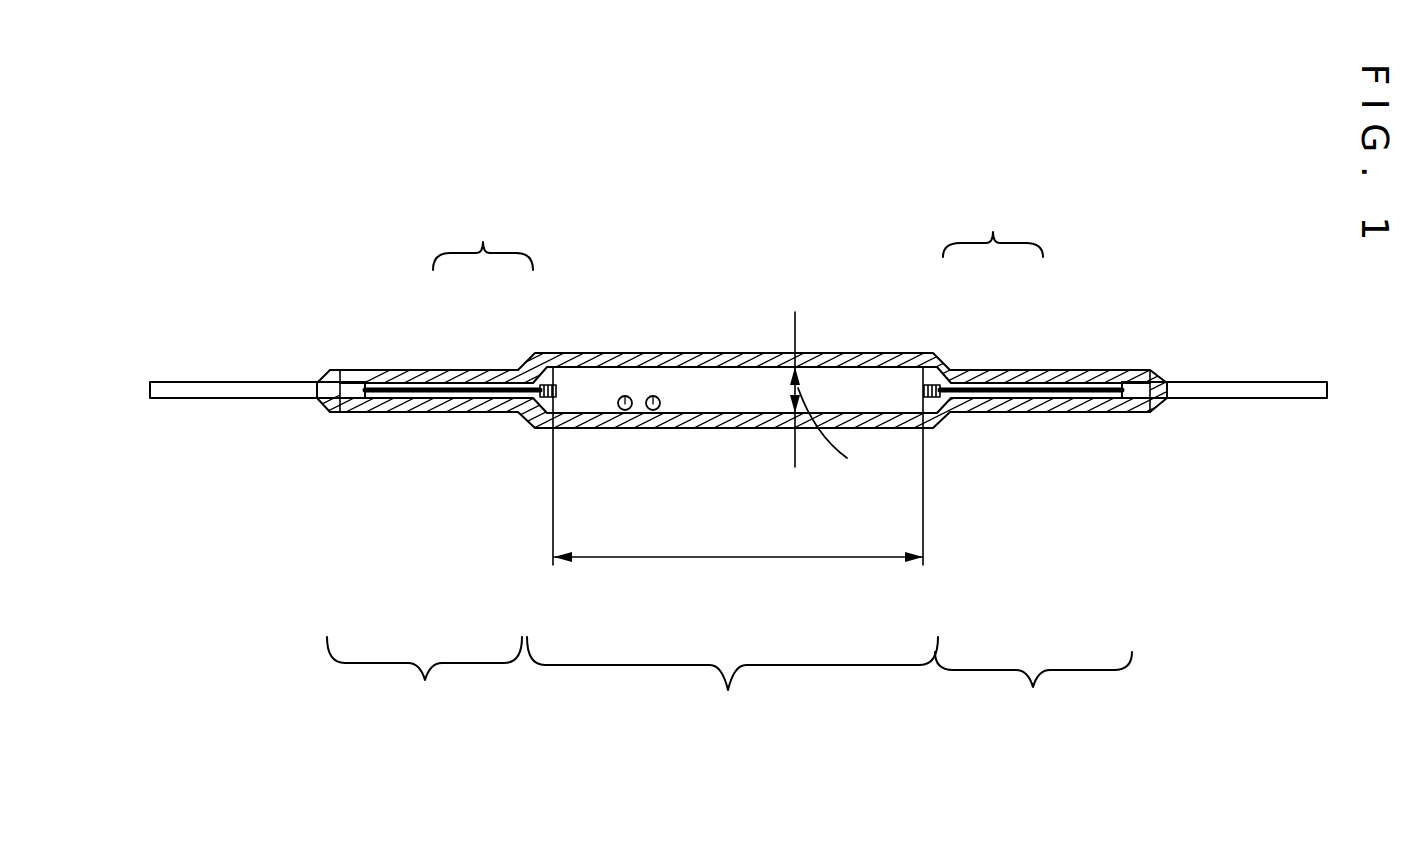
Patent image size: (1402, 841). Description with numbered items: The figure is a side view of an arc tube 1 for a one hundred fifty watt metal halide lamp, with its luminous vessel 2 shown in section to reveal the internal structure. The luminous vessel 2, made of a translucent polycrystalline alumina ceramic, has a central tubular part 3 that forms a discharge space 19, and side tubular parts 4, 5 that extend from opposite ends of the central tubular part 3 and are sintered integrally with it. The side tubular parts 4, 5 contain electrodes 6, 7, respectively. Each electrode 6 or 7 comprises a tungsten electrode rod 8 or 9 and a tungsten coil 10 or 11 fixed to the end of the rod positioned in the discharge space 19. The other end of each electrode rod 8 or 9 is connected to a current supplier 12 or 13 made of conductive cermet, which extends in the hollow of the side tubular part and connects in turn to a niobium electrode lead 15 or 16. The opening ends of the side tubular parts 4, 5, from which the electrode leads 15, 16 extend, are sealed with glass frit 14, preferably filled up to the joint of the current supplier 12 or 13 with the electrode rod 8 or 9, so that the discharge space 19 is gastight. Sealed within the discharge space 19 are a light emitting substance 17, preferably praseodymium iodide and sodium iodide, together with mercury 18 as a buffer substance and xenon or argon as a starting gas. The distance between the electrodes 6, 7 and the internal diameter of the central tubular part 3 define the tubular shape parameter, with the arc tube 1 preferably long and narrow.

The arc tube 1 is at (828, 194).
The luminous vessel 2 is at (849, 352).
The central tubular part 3 is at (732, 527).
The side tubular part 4 is at (424, 552).
The side tubular part 5 is at (1042, 554).
The electrode 6 is at (452, 297).
The electrode 7 is at (1031, 291).
The electrode rod 8 is at (463, 380).
The electrode rod 9 is at (1012, 369).
The coil 10 is at (537, 352).
The coil 11 is at (935, 352).
The current supplier 12 is at (339, 412).
The current supplier 13 is at (1149, 412).
The glass frit 14 is at (321, 371).
The electrode lead 15 is at (202, 381).
The electrode lead 16 is at (1250, 381).
The light emitting substance 17 is at (622, 396).
The mercury 18 is at (652, 396).
The discharge space 19 is at (728, 399).